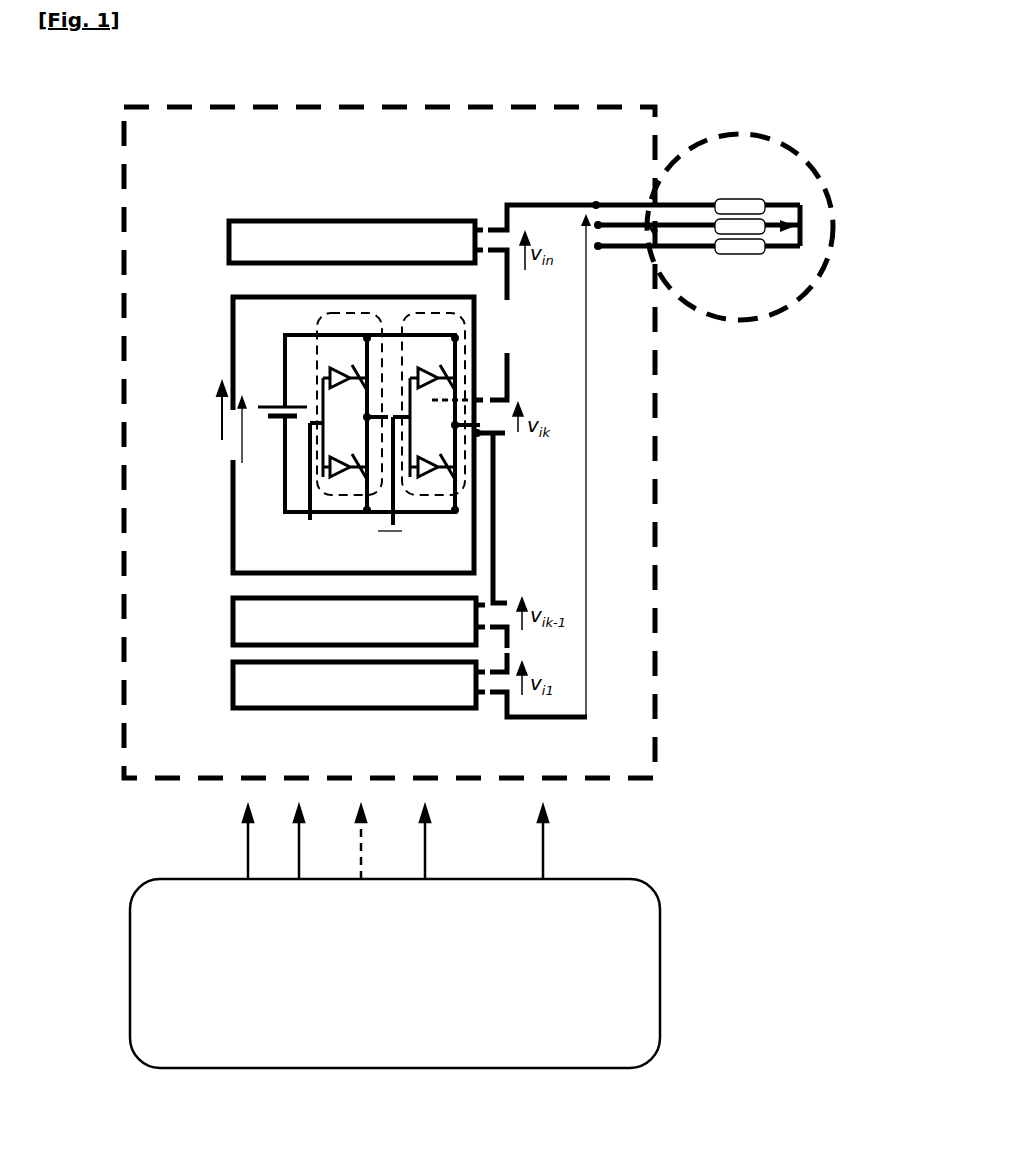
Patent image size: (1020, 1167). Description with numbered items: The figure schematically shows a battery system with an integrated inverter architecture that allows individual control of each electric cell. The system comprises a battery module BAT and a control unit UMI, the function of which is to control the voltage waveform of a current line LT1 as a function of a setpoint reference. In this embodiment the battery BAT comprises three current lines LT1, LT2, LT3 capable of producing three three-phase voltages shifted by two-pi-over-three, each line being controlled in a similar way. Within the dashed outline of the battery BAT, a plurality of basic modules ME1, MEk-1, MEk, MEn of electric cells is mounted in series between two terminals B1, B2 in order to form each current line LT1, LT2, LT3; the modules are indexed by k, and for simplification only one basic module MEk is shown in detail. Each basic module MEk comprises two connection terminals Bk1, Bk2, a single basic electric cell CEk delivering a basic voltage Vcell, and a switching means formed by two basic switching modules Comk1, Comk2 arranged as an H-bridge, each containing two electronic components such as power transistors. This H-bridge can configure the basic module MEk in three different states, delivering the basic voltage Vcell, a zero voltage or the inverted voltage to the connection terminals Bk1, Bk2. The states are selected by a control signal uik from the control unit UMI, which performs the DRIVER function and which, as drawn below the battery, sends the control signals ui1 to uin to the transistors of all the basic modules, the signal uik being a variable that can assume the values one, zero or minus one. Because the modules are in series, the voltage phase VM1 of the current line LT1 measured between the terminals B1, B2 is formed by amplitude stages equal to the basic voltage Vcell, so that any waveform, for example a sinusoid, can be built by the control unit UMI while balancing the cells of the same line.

The battery module BAT is at (125, 150).
The basic module MEn is at (232, 218).
The basic module MEk is at (233, 330).
The basic module MEk-1 is at (233, 622).
The basic module ME1 is at (233, 700).
The basic switching module Comk1 is at (320, 313).
The basic switching module Comk2 is at (440, 313).
The basic electric cell CEk is at (280, 405).
The basic voltage Vcell is at (215, 422).
The current line LT1 is at (525, 203).
The current line LT2 is at (663, 232).
The current line LT3 is at (783, 240).
The terminal B1 is at (598, 203).
The terminal B2 is at (587, 717).
The connection terminal Bk1 is at (500, 360).
The connection terminal Bk2 is at (500, 436).
The voltage phase VM1 is at (598, 494).
The control unit UMI is at (661, 912).
The control signal ui1 is at (246, 876).
The control signal uik is at (360, 872).
The control signal uin is at (542, 874).